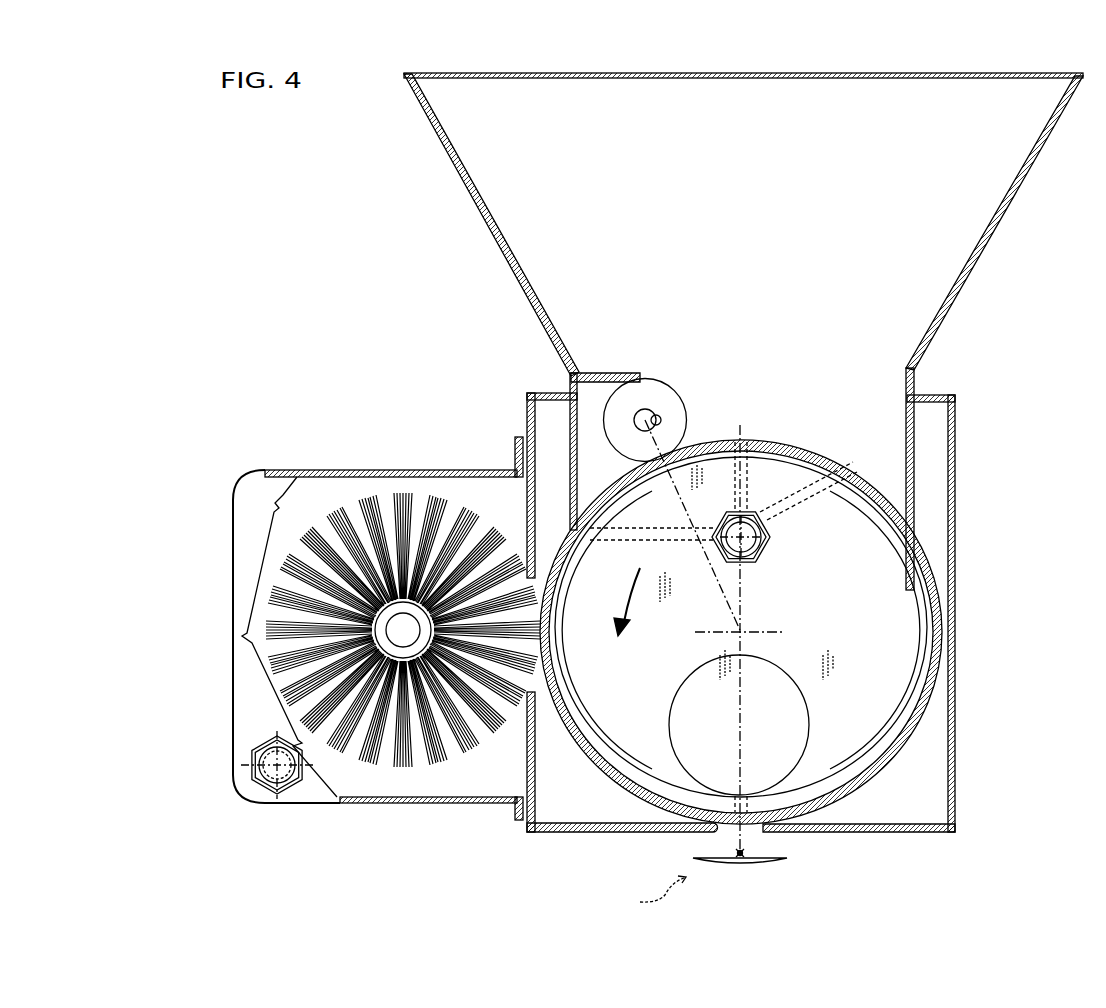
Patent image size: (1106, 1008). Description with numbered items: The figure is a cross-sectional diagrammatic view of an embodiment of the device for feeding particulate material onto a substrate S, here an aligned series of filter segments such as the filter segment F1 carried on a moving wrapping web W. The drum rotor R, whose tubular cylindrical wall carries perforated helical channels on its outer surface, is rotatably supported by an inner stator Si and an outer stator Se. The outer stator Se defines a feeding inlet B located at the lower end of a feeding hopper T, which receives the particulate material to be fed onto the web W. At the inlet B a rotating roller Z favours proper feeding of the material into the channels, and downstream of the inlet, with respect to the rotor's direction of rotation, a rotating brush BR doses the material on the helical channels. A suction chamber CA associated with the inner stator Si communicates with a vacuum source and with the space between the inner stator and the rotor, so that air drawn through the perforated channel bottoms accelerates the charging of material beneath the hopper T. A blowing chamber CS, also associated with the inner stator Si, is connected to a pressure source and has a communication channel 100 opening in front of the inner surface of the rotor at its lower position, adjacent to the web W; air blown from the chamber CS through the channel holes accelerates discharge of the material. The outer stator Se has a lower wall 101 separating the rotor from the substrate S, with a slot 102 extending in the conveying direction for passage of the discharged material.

The feeding hopper T is at (997, 232).
The feeding inlet B is at (893, 416).
The rotating roller Z is at (677, 378).
The drum rotor R is at (870, 482).
The rotating brush BR is at (418, 508).
The suction chamber CA is at (760, 552).
The outer stator Se is at (940, 530).
The rotation axis X is at (746, 634).
The blowing chamber CS is at (700, 703).
The communication channel 100 is at (758, 802).
The inner stator Si is at (890, 687).
The slot 102 is at (718, 835).
The filter segment F1 is at (742, 853).
The wrapping web W is at (756, 863).
The substrate S is at (653, 894).
The lower wall 101 is at (911, 832).